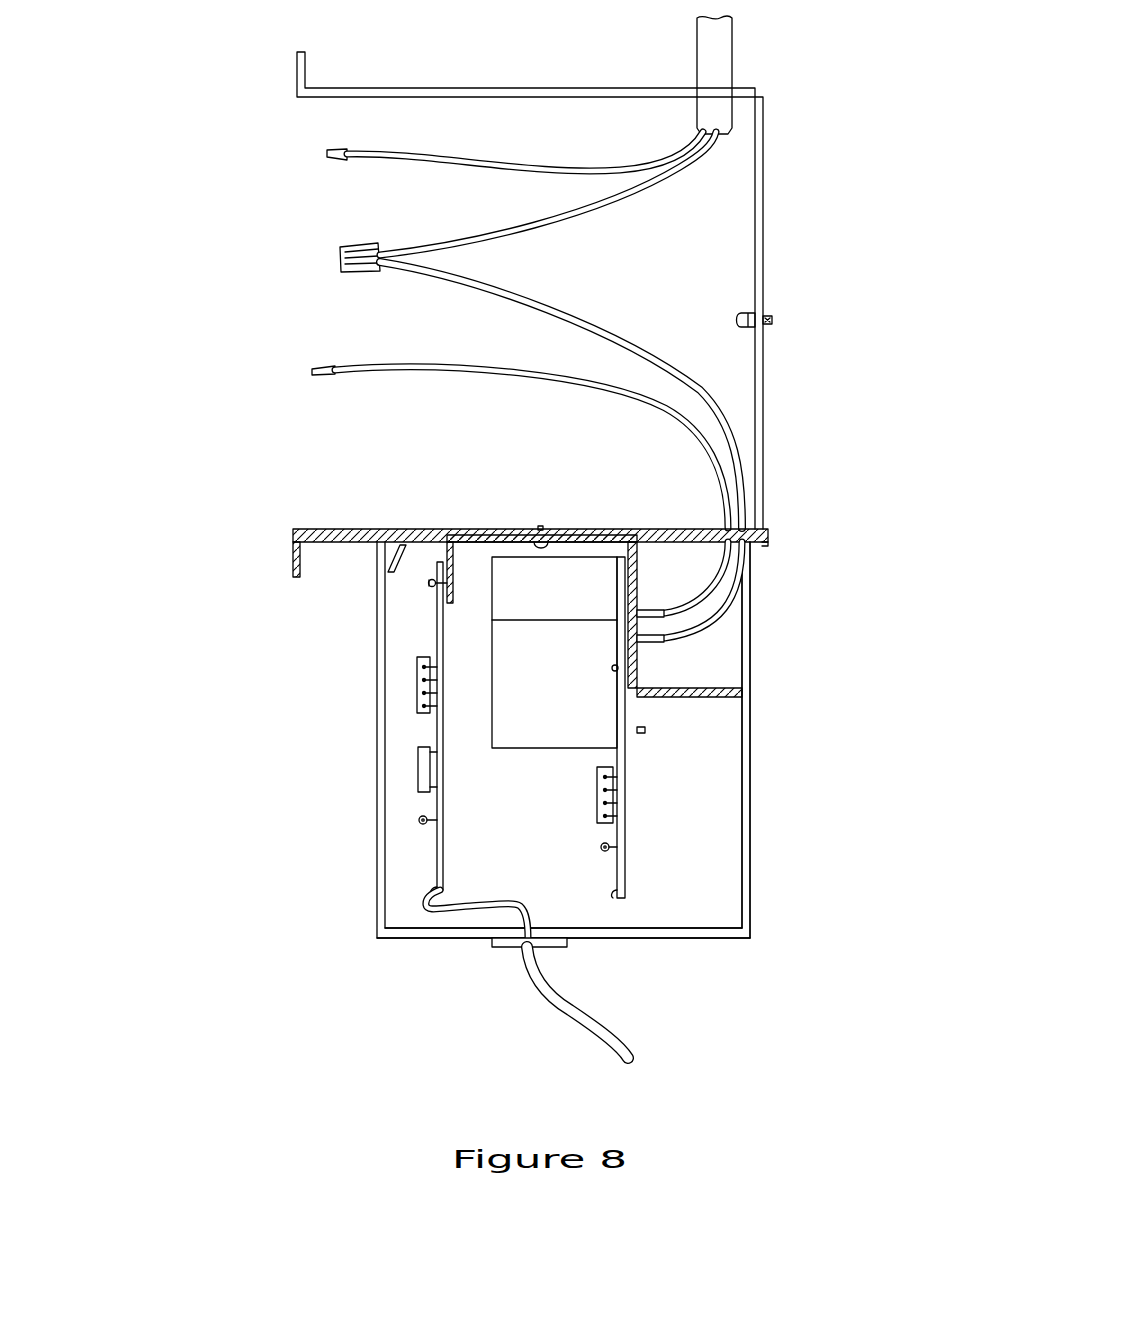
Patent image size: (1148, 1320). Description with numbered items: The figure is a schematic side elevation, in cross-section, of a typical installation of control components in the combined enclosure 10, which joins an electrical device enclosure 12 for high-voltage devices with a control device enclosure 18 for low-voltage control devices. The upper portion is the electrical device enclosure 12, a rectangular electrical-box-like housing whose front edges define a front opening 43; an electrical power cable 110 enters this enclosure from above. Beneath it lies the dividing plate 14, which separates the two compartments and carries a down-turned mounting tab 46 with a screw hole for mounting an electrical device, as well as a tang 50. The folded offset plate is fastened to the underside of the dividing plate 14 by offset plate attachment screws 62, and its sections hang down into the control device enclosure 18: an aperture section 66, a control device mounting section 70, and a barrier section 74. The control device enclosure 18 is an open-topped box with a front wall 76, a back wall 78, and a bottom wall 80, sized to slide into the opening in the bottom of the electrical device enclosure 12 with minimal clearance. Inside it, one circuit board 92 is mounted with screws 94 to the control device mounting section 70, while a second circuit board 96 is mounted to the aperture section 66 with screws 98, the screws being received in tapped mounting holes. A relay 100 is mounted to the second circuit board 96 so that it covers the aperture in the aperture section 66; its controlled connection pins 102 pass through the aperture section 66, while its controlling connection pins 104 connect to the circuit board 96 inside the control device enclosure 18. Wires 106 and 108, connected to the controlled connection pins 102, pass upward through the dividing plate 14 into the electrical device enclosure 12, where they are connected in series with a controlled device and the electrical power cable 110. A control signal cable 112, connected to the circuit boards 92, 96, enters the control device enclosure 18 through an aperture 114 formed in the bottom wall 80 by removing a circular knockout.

The combined enclosure 10 is at (174, 296).
The electrical device enclosure 12 is at (812, 254).
The dividing plate 14 is at (493, 528).
The control device enclosure 18 is at (830, 827).
The front opening 43 is at (283, 305).
The mounting tab 46 is at (293, 570).
The tang 50 is at (377, 585).
The offset plate attachment screws 62 is at (540, 526).
The aperture section 66 is at (637, 575).
The control device mounting section 70 is at (433, 586).
The barrier section 74 is at (720, 688).
The front wall 76 is at (375, 795).
The back wall 78 is at (750, 780).
The bottom wall 80 is at (722, 942).
The circuit board 92 is at (435, 848).
The screws 94 is at (395, 640).
The second circuit board 96 is at (625, 868).
The screws 98 is at (613, 668).
The relay 100 is at (520, 705).
The controlled connection pins 102 is at (665, 638).
The controlling connection pins 104 is at (645, 731).
The wire 106 is at (710, 455).
The wire 108 is at (720, 405).
The electrical power cable 110 is at (733, 42).
The control signal cable 112 is at (537, 997).
The aperture 114 is at (560, 947).